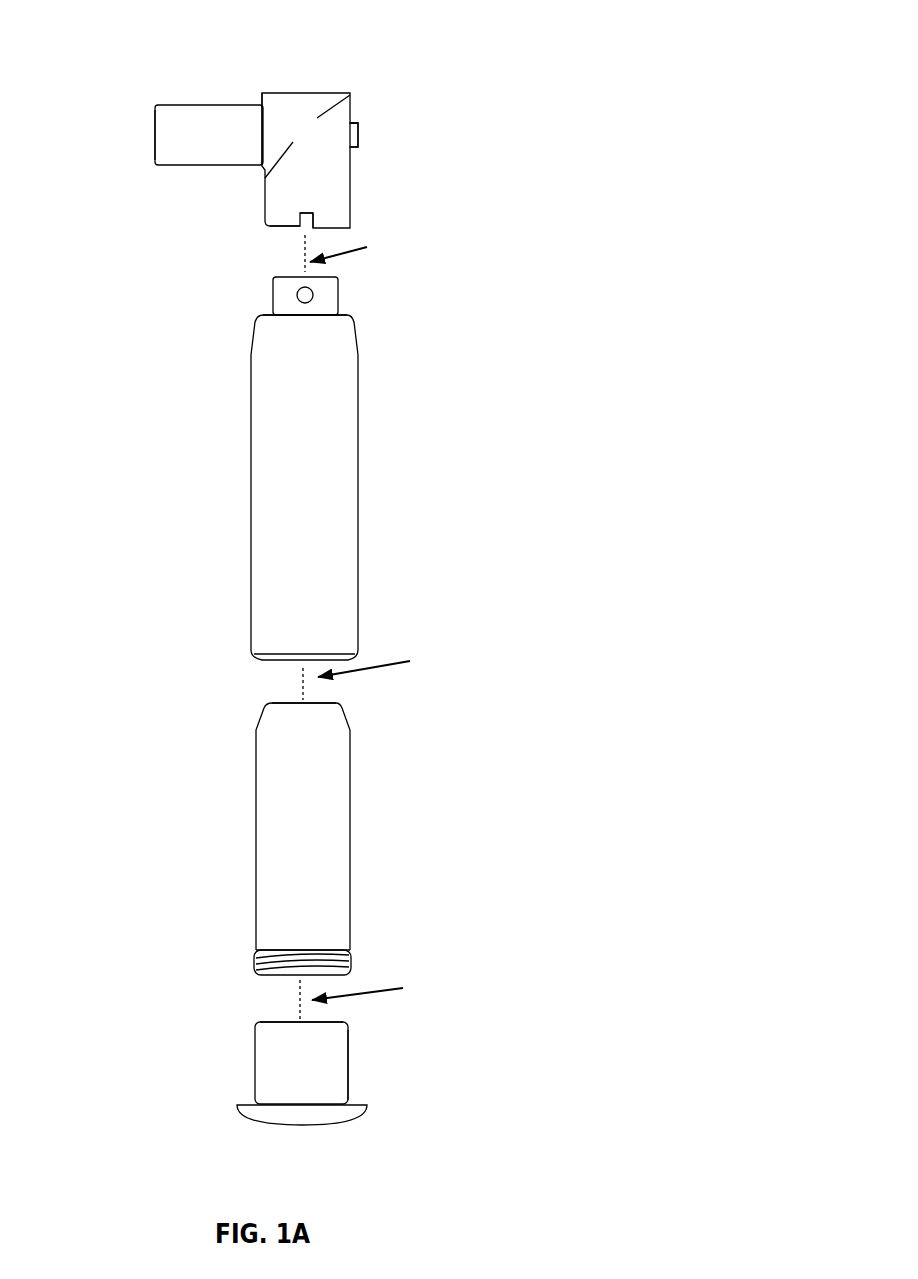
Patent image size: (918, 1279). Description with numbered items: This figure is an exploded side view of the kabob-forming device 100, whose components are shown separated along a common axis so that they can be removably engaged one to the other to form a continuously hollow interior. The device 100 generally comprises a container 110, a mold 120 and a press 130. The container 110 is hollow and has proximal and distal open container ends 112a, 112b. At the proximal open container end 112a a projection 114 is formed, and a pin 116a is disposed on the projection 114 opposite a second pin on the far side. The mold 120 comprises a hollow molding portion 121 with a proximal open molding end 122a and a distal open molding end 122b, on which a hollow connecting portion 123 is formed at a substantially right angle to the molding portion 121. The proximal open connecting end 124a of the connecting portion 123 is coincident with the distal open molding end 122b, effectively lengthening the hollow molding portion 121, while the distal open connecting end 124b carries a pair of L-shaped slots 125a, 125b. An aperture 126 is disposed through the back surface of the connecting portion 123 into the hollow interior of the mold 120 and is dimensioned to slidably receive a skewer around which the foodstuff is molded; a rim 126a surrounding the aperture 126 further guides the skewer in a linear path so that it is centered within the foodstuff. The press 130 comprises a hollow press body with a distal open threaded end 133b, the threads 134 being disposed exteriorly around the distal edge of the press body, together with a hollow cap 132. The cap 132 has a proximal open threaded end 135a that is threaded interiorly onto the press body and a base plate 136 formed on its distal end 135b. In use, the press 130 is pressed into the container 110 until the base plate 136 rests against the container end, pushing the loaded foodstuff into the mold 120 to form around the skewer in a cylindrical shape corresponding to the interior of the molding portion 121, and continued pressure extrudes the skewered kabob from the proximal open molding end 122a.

The device 100 is at (530, 88).
The container 110 is at (218, 466).
The proximal open container end 112a is at (312, 318).
The distal open container end 112b is at (292, 658).
The projection 114 is at (318, 295).
The pin 116a is at (288, 297).
The mold 120 is at (210, 200).
The hollow molding portion 121 is at (200, 123).
The proximal open molding end 122a is at (157, 132).
The distal open molding end 122b is at (262, 107).
The hollow connecting portion 123 is at (330, 123).
The proximal open connecting end 124a is at (267, 128).
The distal open connecting end 124b is at (290, 226).
The L-shaped slot 125a is at (297, 205).
The L-shaped slot 125b is at (322, 210).
The aperture 126 is at (360, 132).
The rim 126a is at (360, 118).
The press 130 is at (223, 800).
The distal open threaded end 133b is at (325, 708).
The threads 134 is at (262, 962).
The hollow cap 132 is at (243, 1060).
The proximal open threaded end 135a is at (330, 1025).
The distal end 135b is at (345, 1103).
The base plate 136 is at (262, 1110).